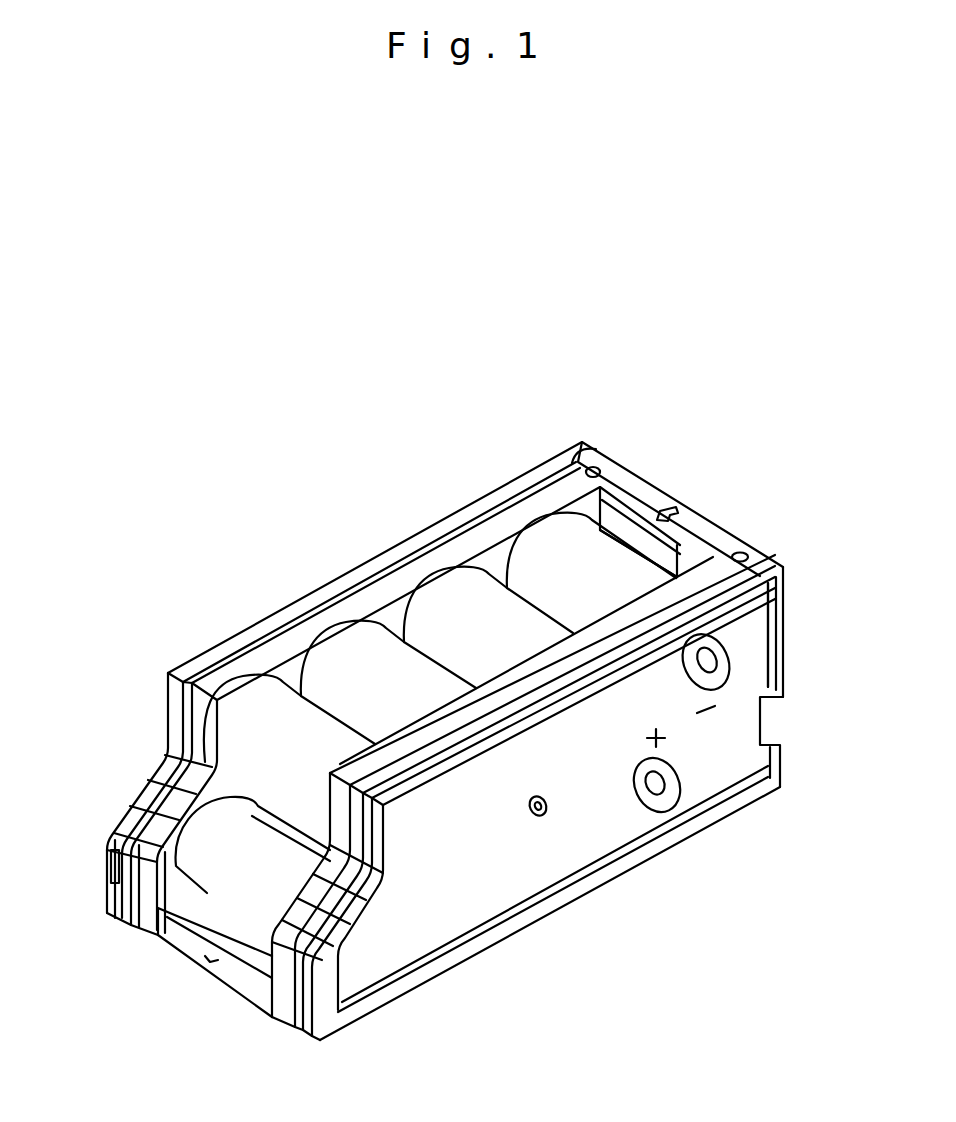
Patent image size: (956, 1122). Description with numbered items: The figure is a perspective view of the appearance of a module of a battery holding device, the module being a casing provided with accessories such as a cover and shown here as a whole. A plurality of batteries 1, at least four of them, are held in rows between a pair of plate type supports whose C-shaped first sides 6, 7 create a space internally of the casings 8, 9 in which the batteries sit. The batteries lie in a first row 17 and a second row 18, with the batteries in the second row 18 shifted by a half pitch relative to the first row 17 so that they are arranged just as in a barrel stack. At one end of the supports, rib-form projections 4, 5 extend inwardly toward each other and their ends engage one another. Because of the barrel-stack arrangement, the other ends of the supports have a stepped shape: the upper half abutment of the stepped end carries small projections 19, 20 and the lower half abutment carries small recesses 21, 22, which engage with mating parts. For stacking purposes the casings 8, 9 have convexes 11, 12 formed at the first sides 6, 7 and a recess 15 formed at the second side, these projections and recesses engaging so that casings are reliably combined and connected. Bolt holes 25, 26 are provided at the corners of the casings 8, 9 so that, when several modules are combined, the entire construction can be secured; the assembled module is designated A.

The battery 1 is at (600, 570).
The rib-form projection 4 is at (720, 520).
The rib-form projection 5 is at (660, 490).
The first side 6 is at (687, 583).
The first side 7 is at (527, 515).
The casing 8 is at (617, 880).
The casing 9 is at (372, 555).
The convex 11 is at (657, 617).
The convex 12 is at (450, 527).
The recess 15 is at (703, 830).
The first row 17 is at (255, 730).
The second row 18 is at (213, 853).
The small projection 19 is at (353, 827).
The small projection 20 is at (173, 703).
The small recess 21 is at (307, 980).
The small recess 22 is at (116, 818).
The bolt hole 25 is at (747, 557).
The bolt hole 26 is at (592, 462).
The battery pack A is at (553, 930).